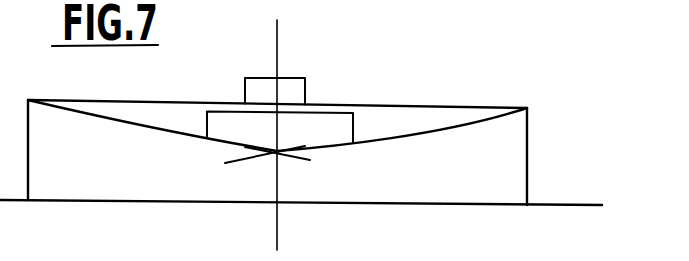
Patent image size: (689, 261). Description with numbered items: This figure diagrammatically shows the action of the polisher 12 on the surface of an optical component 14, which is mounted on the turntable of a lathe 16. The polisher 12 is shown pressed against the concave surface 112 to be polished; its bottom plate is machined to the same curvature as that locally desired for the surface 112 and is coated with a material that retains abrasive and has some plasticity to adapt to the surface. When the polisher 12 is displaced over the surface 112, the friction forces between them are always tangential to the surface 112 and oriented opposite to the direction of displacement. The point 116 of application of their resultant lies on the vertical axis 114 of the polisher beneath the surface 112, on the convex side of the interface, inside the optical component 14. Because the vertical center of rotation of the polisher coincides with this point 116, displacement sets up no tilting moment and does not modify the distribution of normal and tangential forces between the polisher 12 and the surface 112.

The polisher 12 is at (322, 105).
The optical component 14 is at (528, 128).
The lathe 16 is at (572, 204).
The concave surface 112 is at (464, 124).
The vertical axis of the polisher 114 is at (276, 22).
The point of application of the resultant of the friction forces 116 is at (276, 155).